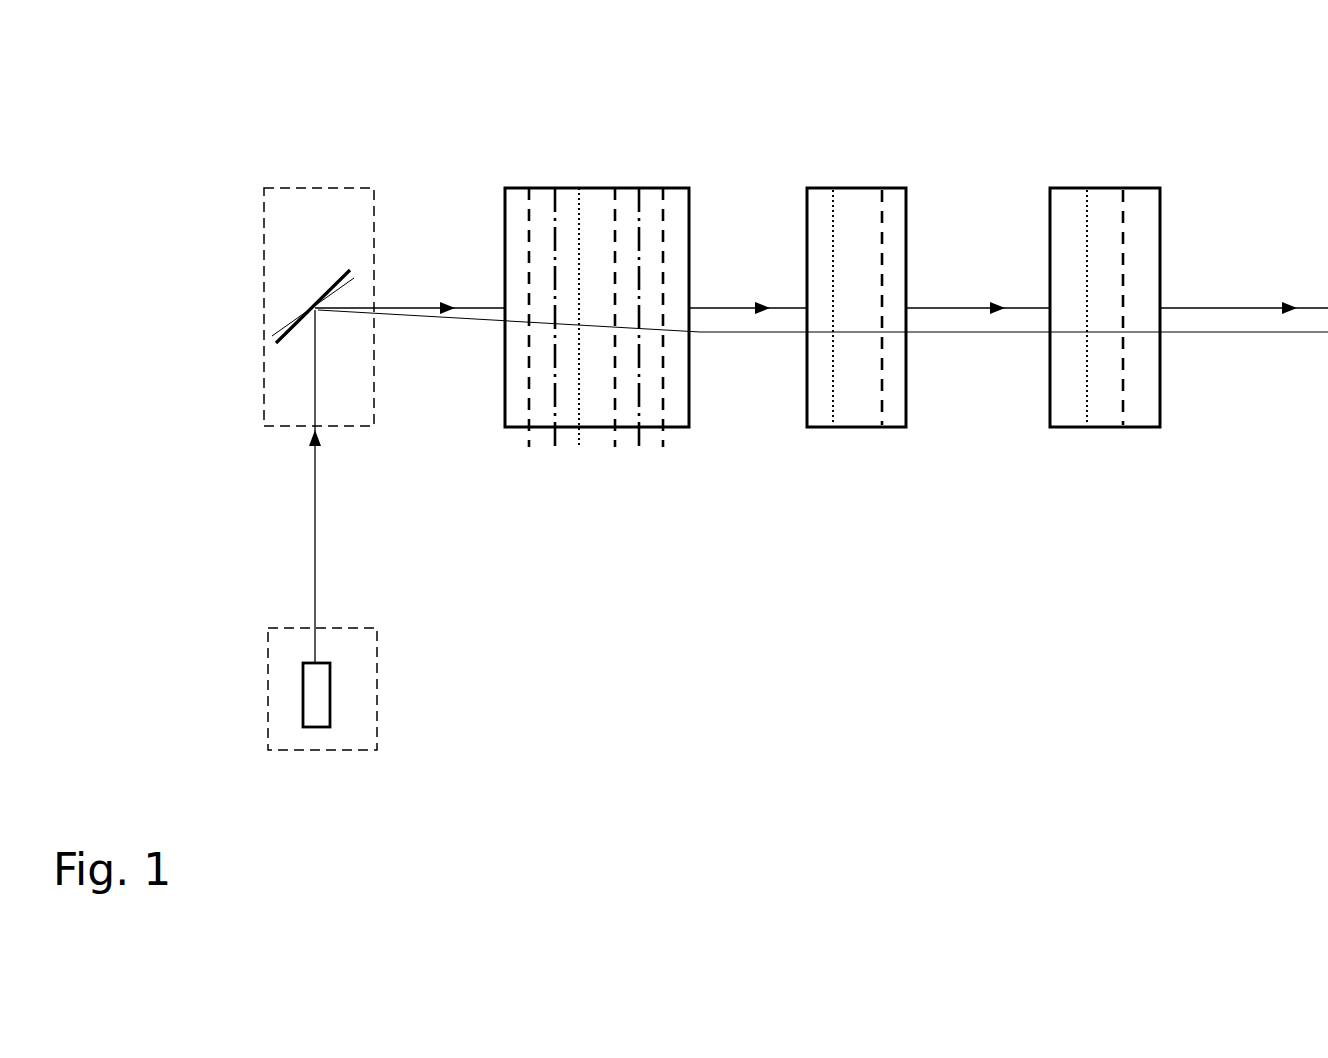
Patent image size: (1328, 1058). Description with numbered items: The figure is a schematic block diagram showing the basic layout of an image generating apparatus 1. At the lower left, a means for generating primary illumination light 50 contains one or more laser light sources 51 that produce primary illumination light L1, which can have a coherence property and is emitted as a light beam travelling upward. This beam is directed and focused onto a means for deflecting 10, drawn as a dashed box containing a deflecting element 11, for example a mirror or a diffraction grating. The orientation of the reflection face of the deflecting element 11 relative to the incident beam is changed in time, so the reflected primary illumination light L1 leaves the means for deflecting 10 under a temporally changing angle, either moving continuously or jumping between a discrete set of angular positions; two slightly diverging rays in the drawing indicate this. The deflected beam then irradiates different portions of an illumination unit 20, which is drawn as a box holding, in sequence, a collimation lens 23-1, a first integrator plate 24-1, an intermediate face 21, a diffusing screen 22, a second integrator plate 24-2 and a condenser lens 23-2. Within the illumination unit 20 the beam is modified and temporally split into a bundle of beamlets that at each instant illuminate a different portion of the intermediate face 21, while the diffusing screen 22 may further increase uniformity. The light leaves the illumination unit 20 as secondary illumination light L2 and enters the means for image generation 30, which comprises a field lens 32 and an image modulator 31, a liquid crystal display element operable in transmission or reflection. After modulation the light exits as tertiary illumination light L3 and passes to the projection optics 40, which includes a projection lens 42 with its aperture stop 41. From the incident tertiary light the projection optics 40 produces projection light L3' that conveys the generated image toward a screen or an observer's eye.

The image generating apparatus 1 is at (1028, 673).
The means for deflecting 10 is at (311, 188).
The deflecting element 11 is at (336, 292).
The illumination unit 20 is at (585, 188).
The intermediate face 21 is at (579, 449).
The diffusing screen 22 is at (615, 449).
The collimation lens 23-1 is at (531, 449).
The condenser lens 23-2 is at (663, 449).
The first integrator plate 24-1 is at (555, 449).
The second integrator plate 24-2 is at (639, 449).
The means for image generation 30 is at (850, 188).
The image modulator 31 is at (882, 370).
The field lens 32 is at (833, 370).
The projection optics 40 is at (1088, 188).
The aperture stop 41 is at (1078, 380).
The projection lens 42 is at (1135, 380).
The means for generating primary illumination light 50 is at (378, 650).
The laser light source 51 is at (330, 710).
The primary illumination light L1 is at (440, 305).
The secondary illumination light L2 is at (752, 305).
The tertiary illumination light L3 is at (978, 240).
The projection light L3' is at (1244, 240).